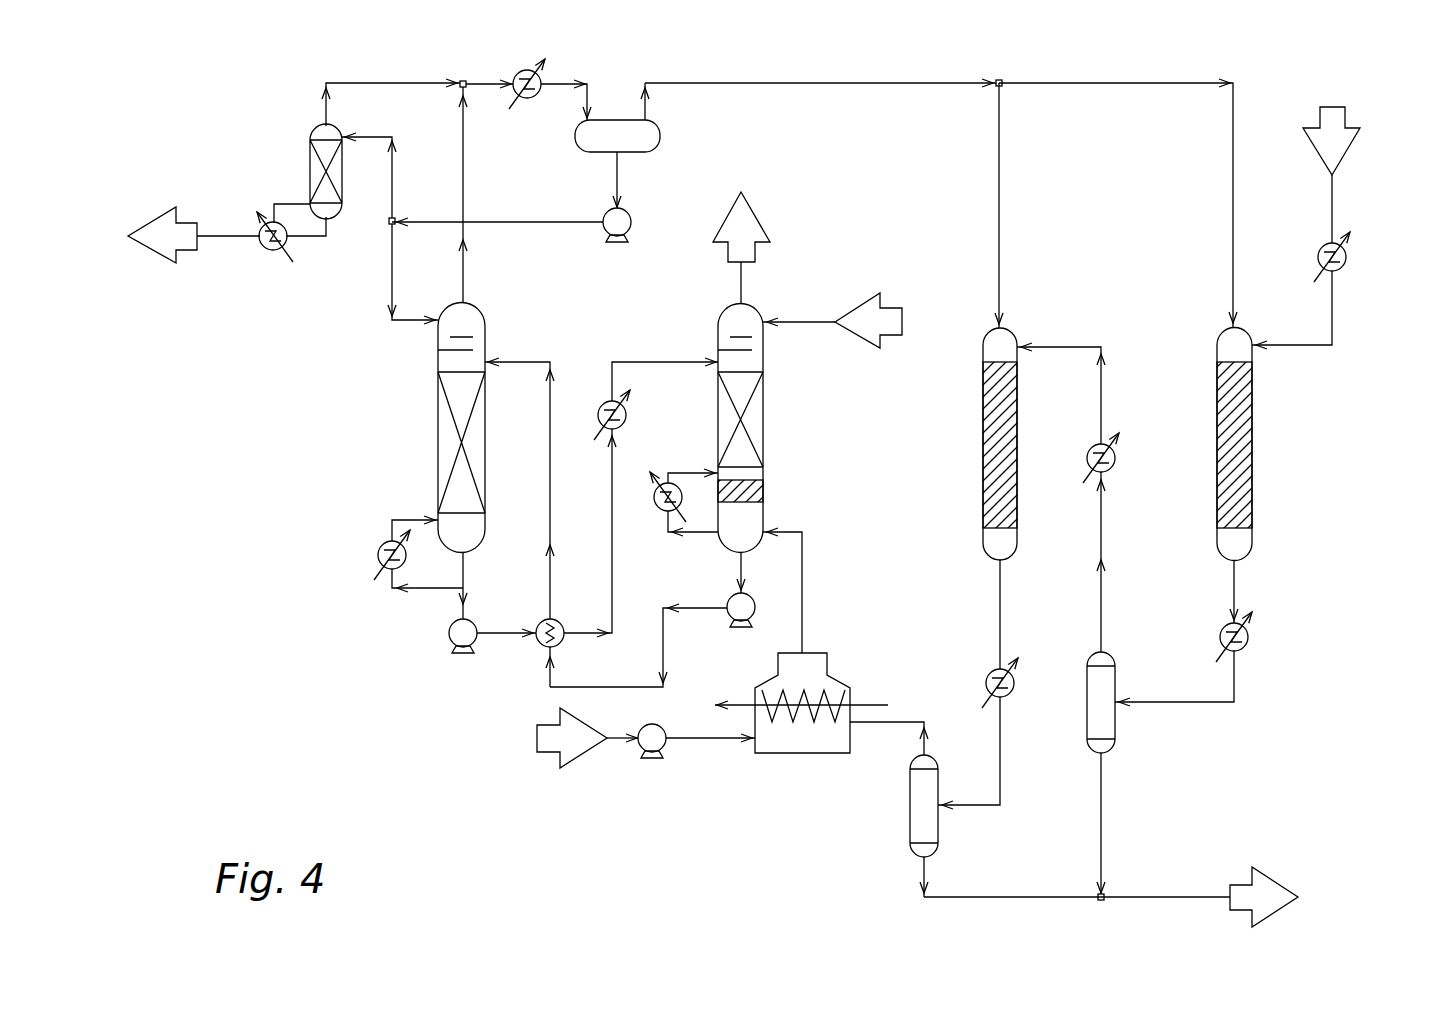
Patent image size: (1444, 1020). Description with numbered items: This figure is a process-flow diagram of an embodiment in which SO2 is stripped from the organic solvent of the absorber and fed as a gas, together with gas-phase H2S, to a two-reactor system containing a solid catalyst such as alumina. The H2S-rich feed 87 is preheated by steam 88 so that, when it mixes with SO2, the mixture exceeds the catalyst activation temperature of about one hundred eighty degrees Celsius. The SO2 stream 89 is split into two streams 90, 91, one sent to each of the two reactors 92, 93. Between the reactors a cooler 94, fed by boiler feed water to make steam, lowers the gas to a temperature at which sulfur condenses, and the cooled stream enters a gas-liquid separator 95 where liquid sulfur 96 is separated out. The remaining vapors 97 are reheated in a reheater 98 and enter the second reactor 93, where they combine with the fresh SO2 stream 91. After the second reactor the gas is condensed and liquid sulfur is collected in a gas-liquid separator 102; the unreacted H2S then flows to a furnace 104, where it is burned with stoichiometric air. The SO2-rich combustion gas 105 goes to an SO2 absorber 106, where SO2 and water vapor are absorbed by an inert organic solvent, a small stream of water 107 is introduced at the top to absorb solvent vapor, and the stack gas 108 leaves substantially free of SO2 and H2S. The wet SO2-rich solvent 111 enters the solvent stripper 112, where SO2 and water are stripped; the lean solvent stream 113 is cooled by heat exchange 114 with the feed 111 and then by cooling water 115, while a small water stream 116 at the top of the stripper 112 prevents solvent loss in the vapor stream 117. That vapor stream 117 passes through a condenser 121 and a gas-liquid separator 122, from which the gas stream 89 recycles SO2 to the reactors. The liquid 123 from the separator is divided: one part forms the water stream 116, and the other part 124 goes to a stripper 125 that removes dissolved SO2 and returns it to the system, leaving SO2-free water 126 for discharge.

The H2S-rich feed 87 is at (1347, 117).
The steam 88 is at (1348, 255).
The SO2 stream 89 is at (887, 85).
The SO2 stream to first reactor 90 is at (1233, 182).
The fresh SO2 stream to second reactor 91 is at (1000, 183).
The first reactor 92 is at (1253, 452).
The second reactor 93 is at (985, 452).
The cooler 94 is at (1250, 635).
The gas-liquid separator 95 is at (1117, 687).
The liquid sulfur 96 is at (1273, 877).
The remaining vapors 97 is at (1102, 565).
The reheater 98 is at (1117, 457).
The gas-liquid separator 102 is at (910, 810).
The furnace 104 is at (837, 678).
The SO2-rich combustion gas 105 is at (805, 568).
The SO2 absorber 106 is at (765, 423).
The small stream of water 107 is at (892, 303).
The stack gas 108 is at (745, 287).
The wet SO2-rich solvent 111 is at (737, 590).
The solvent stripper 112 is at (438, 448).
The lean solvent stream 113 is at (498, 635).
The heat exchange 114 is at (538, 628).
The cooling water 115 is at (620, 427).
The small water stream 116 is at (392, 268).
The vapor stream 117 is at (463, 265).
The condenser 121 is at (529, 100).
The gas-liquid separator 122 is at (660, 137).
The liquid 123 is at (550, 223).
The liquid stream to stripper 124 is at (392, 188).
The stripper 125 is at (307, 165).
The SO2-free water 126 is at (155, 253).